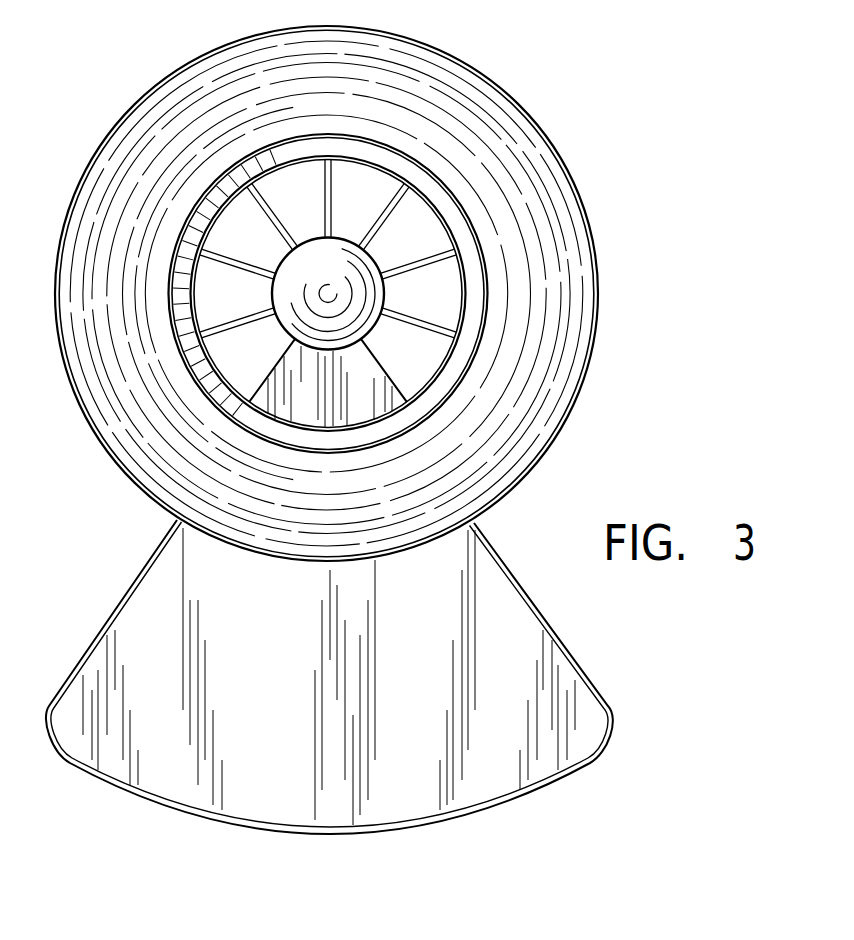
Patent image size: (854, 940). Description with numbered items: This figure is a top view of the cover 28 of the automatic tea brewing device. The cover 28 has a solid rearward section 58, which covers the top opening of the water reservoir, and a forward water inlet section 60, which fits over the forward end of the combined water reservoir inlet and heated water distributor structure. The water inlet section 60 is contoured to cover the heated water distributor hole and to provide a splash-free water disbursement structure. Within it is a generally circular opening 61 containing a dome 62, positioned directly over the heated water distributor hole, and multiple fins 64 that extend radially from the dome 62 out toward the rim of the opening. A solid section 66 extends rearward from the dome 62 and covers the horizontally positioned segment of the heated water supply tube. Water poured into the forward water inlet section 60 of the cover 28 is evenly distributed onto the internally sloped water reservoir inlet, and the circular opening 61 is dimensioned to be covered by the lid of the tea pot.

The cover 28 is at (340, 293).
The solid rearward section 58 is at (150, 632).
The forward water inlet section 60 is at (490, 122).
The generally circular opening 61 is at (468, 383).
The dome 62 is at (297, 300).
The fins 64 is at (328, 200).
The solid section 66 is at (348, 382).